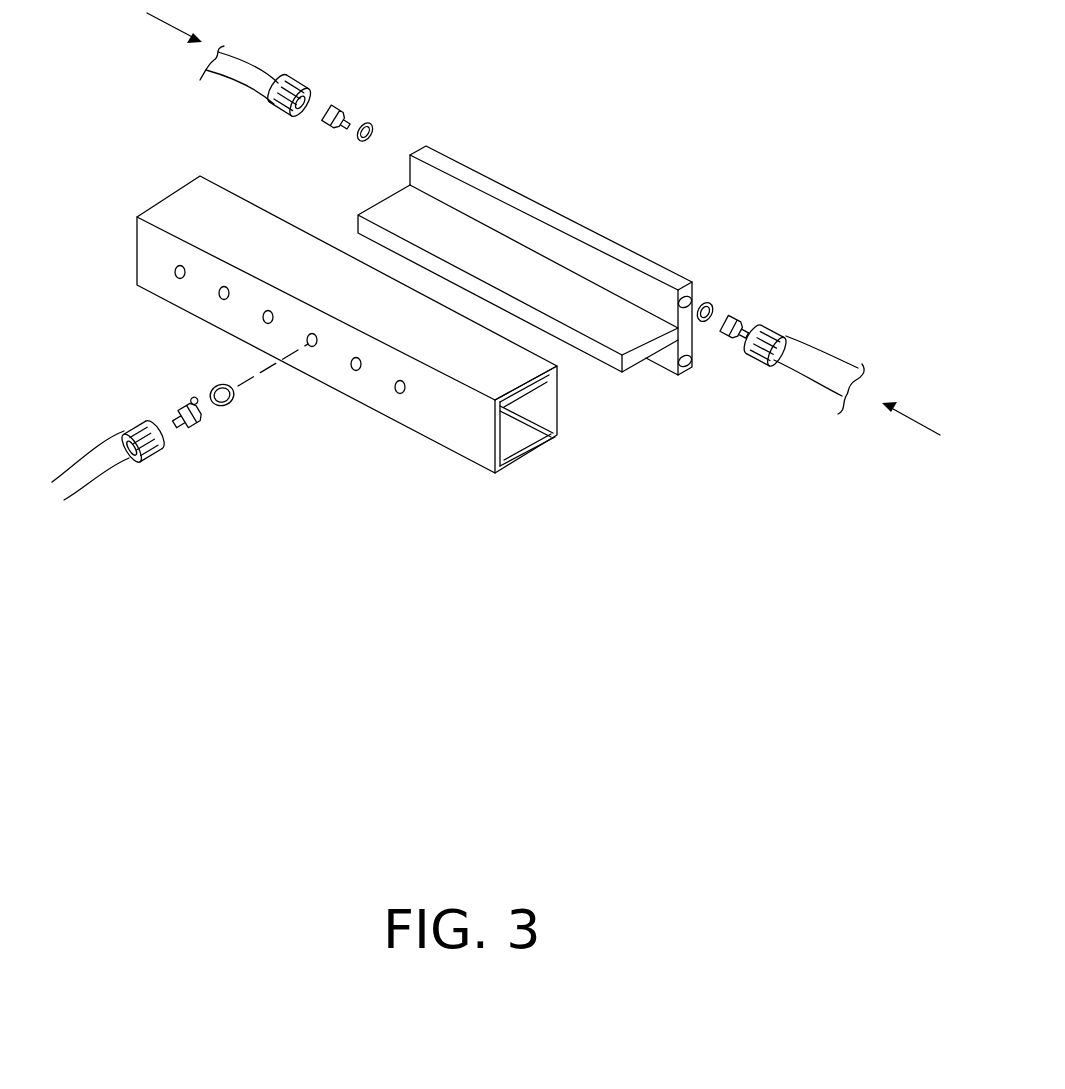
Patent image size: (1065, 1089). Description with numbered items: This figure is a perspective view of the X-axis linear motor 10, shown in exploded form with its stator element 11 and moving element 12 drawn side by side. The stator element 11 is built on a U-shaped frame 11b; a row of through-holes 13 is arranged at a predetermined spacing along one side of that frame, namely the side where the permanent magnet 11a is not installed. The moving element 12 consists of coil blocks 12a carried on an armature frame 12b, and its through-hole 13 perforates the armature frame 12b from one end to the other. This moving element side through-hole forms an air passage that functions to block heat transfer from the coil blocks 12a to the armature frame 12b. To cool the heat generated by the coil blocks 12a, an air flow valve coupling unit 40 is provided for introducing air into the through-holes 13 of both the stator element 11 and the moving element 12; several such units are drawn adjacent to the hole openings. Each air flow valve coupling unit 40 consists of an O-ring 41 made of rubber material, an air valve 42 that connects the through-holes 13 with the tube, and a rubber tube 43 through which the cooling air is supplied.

The X-axis linear motor 10 is at (490, 149).
The stator element 11 is at (474, 466).
The permanent magnet 11a is at (543, 382).
The U-shaped frame 11b is at (527, 452).
The moving element 12 is at (560, 215).
The coil blocks 12a is at (630, 358).
The armature frame 12b is at (617, 250).
The through-holes 13 is at (688, 282).
The air flow valve coupling unit 40 is at (375, 105).
The O-ring 41 is at (230, 402).
The air valve 42 is at (197, 432).
The rubber tube 43 is at (156, 452).